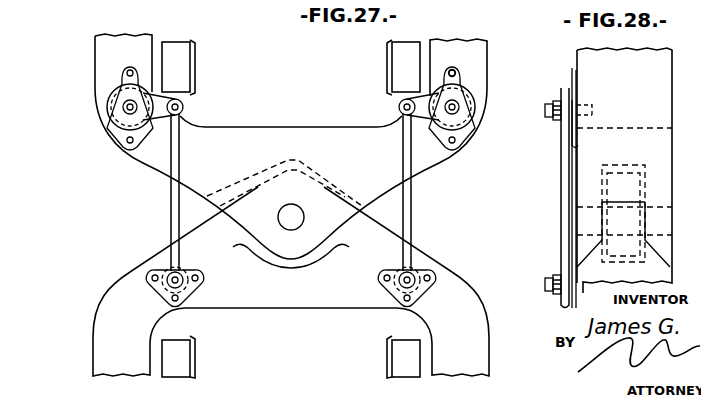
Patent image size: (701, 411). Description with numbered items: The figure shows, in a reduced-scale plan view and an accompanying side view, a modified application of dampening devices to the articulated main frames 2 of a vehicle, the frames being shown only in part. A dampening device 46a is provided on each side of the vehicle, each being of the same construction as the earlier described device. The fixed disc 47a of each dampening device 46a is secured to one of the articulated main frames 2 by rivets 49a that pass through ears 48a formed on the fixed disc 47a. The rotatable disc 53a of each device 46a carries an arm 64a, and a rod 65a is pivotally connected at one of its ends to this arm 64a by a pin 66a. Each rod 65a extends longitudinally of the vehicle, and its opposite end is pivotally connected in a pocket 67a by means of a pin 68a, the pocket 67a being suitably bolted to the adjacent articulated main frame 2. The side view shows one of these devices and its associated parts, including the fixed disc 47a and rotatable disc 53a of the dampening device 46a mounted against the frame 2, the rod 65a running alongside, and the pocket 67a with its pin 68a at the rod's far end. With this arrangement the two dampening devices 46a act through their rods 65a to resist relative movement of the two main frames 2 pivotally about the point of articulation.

In FIG. 27, the articulated main frame 2 is at (291, 206).
In FIG. 28, the articulated main frame 2 is at (624, 170).
In FIG. 27, the dampening device 46a is at (110, 137).
In FIG. 28, the dampening device 46a is at (577, 132).
In FIG. 27, the fixed disc 47a is at (477, 101).
In FIG. 28, the fixed disc 47a is at (580, 80).
In FIG. 27, the ears 48a is at (461, 78).
In FIG. 27, the rivets 49a is at (453, 156).
In FIG. 27, the rotatable disc 53a is at (108, 101).
In FIG. 27, the arm 64a is at (193, 173).
In FIG. 27, the rod 65a is at (170, 217).
In FIG. 28, the rod 65a is at (561, 217).
In FIG. 27, the pin 66a is at (190, 106).
In FIG. 27, the pocket 67a is at (188, 303).
In FIG. 28, the pocket 67a is at (562, 293).
In FIG. 27, the pin 68a is at (187, 272).
In FIG. 28, the pin 68a is at (548, 284).